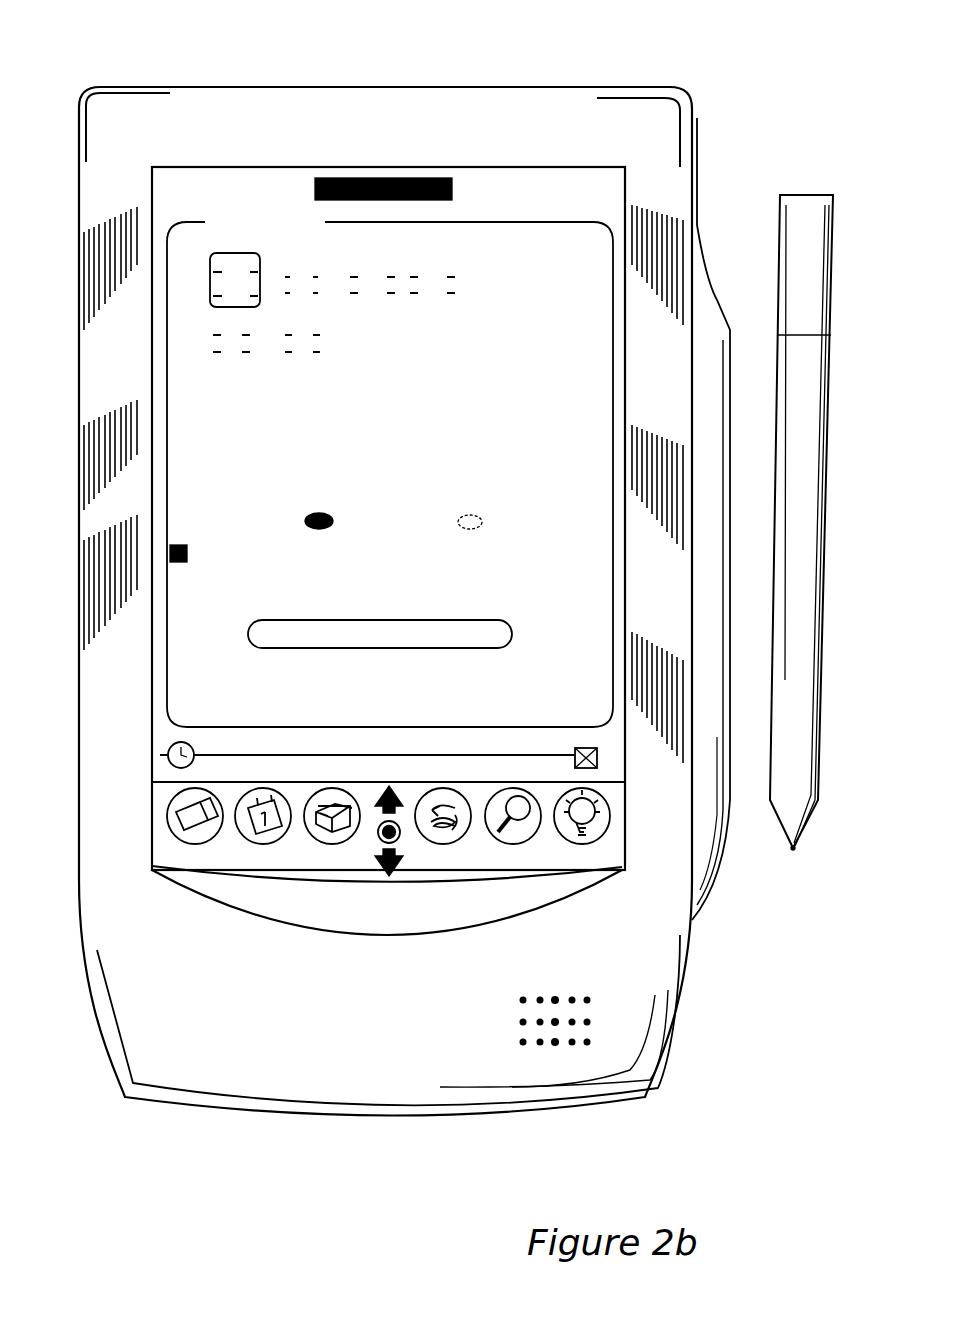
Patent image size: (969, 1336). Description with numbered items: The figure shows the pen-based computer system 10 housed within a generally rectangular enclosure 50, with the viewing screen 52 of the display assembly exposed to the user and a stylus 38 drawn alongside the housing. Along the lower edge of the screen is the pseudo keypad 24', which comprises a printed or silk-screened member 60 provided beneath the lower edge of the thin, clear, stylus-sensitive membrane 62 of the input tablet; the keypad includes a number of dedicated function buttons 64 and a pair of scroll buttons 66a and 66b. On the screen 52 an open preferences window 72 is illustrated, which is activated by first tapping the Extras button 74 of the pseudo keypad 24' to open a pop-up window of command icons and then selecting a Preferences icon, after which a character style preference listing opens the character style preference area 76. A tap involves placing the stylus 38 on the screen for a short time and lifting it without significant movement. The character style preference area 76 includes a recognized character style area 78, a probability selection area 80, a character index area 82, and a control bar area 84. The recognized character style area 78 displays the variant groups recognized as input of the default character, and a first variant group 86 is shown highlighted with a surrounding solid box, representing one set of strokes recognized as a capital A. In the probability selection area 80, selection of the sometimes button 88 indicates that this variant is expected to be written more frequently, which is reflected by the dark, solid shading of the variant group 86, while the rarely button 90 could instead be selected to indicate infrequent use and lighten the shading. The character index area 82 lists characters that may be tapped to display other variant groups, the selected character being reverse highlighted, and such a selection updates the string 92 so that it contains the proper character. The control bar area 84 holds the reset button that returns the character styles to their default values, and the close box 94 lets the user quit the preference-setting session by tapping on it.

The pen-based computer system 10 is at (118, 58).
The pseudo keypad 24' is at (667, 870).
The stylus 38 is at (808, 207).
The enclosure 50 is at (93, 908).
The screen 52 is at (166, 652).
The printed member 60 is at (156, 847).
The stylus-sensitive membrane 62 is at (162, 789).
The dedicated function buttons 64 is at (577, 790).
The scroll button 66a is at (384, 788).
The scroll button 66b is at (391, 878).
The preferences window 72 is at (168, 189).
The Extras button 74 is at (465, 824).
The character style preference area 76 is at (168, 358).
The recognized character style area 78 is at (368, 300).
The probability selection area 80 is at (374, 486).
The character index area 82 is at (514, 603).
The control bar area 84 is at (262, 650).
The first variant group 86 is at (257, 258).
The sometimes button 88 is at (321, 512).
The rarely button 90 is at (470, 512).
The string 92 is at (200, 512).
The close box 94 is at (597, 757).